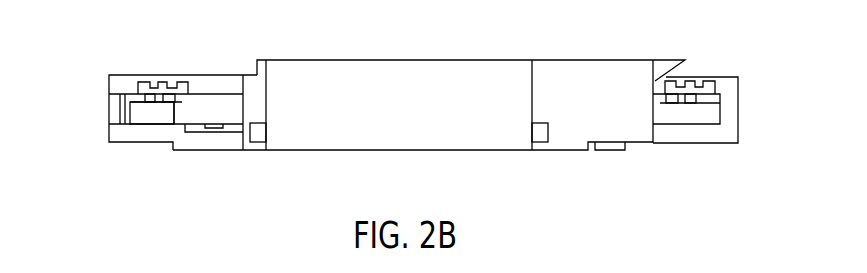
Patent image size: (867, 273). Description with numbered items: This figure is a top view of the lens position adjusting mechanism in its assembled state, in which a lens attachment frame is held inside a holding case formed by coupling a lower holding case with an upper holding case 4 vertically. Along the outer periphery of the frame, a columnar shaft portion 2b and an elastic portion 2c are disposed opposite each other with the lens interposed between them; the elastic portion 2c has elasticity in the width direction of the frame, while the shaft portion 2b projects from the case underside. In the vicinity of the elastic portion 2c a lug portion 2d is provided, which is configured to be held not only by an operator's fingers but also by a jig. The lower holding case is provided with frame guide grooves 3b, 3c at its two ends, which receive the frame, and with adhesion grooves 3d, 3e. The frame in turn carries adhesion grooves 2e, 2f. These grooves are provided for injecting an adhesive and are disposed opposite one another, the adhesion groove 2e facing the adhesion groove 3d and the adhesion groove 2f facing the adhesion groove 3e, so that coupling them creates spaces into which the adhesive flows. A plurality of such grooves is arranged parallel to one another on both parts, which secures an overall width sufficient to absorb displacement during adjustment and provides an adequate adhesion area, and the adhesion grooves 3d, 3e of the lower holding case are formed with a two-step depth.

The upper holding case 4 is at (400, 75).
The frame guide groove 3c is at (106, 108).
The frame guide groove 3b is at (722, 110).
The adhesion groove 3e is at (162, 80).
The adhesion groove 3d is at (688, 81).
The lug portion 2d is at (135, 108).
The adhesion groove 2e is at (692, 103).
The adhesion groove 2f is at (175, 100).
The elastic portion 2c is at (218, 129).
The shaft portion 2b is at (610, 150).